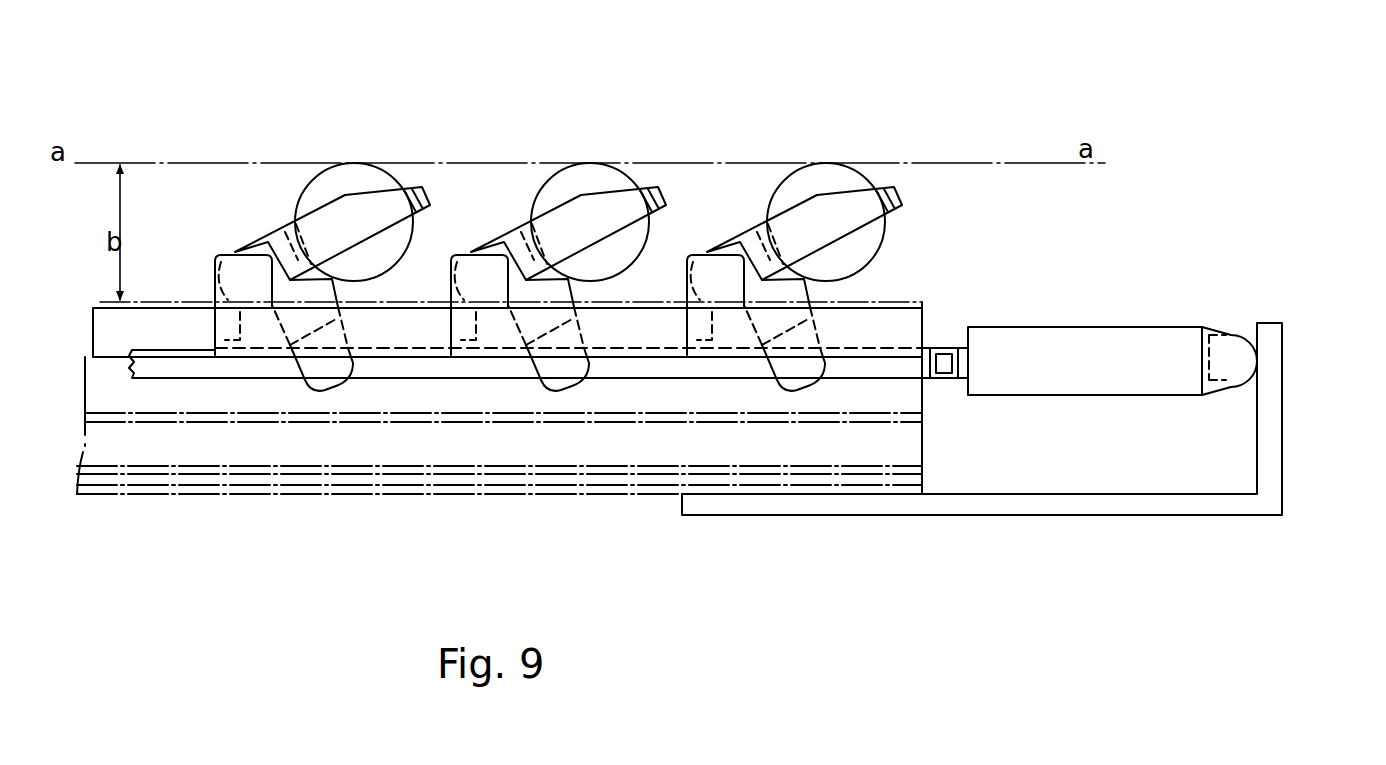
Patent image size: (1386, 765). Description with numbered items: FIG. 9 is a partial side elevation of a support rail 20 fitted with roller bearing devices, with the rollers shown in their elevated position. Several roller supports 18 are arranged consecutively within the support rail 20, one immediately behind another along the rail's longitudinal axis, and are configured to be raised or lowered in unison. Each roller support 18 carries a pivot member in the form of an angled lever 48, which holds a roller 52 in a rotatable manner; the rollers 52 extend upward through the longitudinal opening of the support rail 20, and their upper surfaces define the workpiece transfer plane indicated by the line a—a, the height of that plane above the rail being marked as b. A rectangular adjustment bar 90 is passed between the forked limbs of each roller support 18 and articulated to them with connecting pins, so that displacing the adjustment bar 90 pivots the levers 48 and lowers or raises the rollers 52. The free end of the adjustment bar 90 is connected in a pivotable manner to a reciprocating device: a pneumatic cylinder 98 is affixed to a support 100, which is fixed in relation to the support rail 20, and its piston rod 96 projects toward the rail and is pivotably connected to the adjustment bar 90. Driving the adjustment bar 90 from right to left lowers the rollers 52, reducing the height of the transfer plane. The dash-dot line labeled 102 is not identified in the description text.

The roller support 18 is at (743, 201).
The support rail 20 is at (198, 496).
The angled lever 48 is at (436, 194).
The roller 52 is at (370, 178).
The adjustment bar 90 is at (160, 350).
The piston rod 96 is at (961, 336).
The pneumatic cylinder 98 is at (1103, 340).
The support 100 is at (1272, 367).
The axis line 102 is at (893, 298).